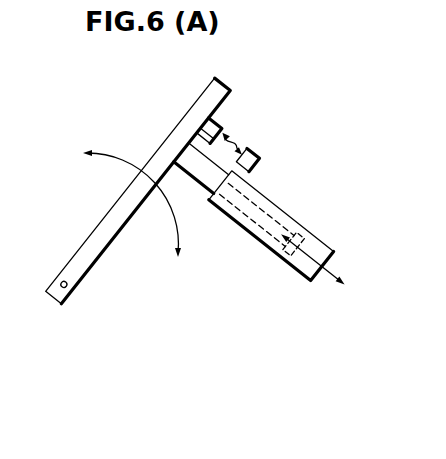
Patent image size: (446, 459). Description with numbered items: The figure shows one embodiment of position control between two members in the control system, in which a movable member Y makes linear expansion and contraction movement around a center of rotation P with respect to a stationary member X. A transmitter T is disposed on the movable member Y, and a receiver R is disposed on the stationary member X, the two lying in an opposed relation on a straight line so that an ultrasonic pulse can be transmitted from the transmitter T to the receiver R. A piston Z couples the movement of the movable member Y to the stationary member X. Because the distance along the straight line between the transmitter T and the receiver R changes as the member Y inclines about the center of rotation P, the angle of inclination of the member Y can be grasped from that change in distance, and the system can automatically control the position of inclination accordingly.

The movable member Y is at (187, 123).
The center of rotation P is at (62, 306).
The piston Z is at (198, 181).
The transmitter T is at (217, 122).
The receiver R is at (255, 156).
The stationary member X is at (297, 272).